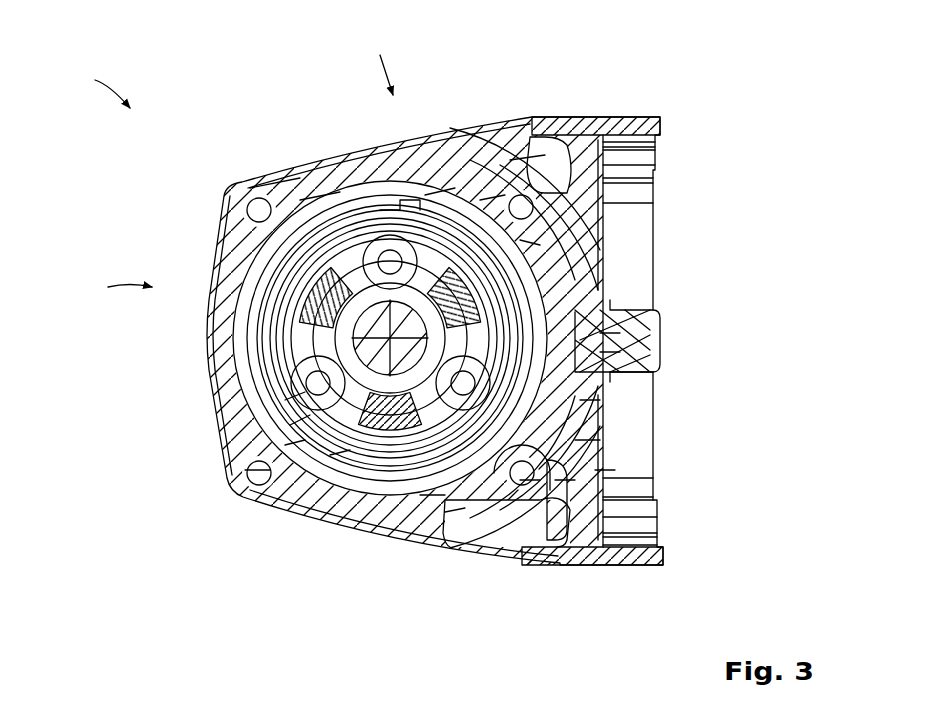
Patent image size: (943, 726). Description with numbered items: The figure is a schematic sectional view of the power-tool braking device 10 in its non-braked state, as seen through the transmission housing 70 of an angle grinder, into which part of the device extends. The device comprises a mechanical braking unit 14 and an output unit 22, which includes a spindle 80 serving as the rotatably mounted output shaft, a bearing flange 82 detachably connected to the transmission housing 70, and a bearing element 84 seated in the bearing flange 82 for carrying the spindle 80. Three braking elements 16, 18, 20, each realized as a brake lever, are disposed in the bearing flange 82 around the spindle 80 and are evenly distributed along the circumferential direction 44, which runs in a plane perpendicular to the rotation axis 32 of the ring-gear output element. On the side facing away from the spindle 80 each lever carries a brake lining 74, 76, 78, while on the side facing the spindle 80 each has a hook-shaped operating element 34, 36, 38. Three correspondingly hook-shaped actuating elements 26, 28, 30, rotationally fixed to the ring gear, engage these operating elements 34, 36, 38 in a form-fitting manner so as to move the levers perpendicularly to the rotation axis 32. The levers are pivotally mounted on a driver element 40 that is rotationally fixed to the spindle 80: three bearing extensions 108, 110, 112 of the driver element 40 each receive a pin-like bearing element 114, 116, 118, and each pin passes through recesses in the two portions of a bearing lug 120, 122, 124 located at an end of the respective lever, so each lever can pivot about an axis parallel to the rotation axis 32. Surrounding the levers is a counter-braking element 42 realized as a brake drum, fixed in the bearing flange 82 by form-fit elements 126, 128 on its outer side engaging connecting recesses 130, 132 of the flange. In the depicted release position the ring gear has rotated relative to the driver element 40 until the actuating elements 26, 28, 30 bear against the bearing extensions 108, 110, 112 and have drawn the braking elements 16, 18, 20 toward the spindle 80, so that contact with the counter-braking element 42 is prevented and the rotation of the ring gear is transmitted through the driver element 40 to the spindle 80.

The power-tool braking device 10 is at (95, 79).
The mechanical braking unit 14 is at (386, 56).
The braking element 16 is at (377, 327).
The braking element 18 is at (527, 150).
The braking element 20 is at (392, 485).
The output unit 22 is at (105, 281).
The actuating element 26 is at (300, 293).
The actuating element 28 is at (560, 277).
The actuating element 30 is at (453, 513).
The rotation axis 32 is at (340, 465).
The operating element 34 is at (268, 240).
The operating element 36 is at (600, 303).
The operating element 38 is at (360, 490).
The driver element 40 is at (328, 293).
The counter-braking element 42 is at (498, 190).
The circumferential direction 44 is at (467, 383).
The transmission housing 70 is at (640, 122).
The brake lining 74 is at (262, 253).
The brake lining 76 is at (525, 243).
The brake lining 78 is at (432, 495).
The spindle 80 is at (300, 385).
The bearing flange 82 is at (252, 277).
The bearing element 84 is at (317, 383).
The bearing extension 108 is at (290, 405).
The bearing extension 110 is at (437, 190).
The bearing extension 112 is at (535, 480).
The bearing element 114 is at (255, 440).
The bearing element 116 is at (390, 258).
The bearing element 118 is at (593, 377).
The bearing lug 120 is at (258, 468).
The bearing lug 122 is at (405, 235).
The bearing lug 124 is at (580, 440).
The form-fit element 126 is at (600, 332).
The form-fit element 128 is at (560, 480).
The connecting recess 130 is at (600, 352).
The connecting recess 132 is at (600, 470).